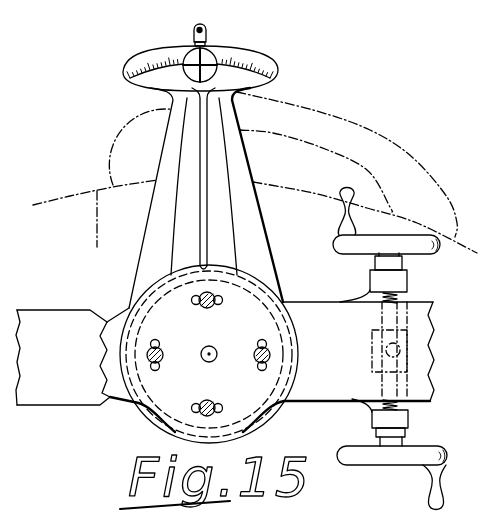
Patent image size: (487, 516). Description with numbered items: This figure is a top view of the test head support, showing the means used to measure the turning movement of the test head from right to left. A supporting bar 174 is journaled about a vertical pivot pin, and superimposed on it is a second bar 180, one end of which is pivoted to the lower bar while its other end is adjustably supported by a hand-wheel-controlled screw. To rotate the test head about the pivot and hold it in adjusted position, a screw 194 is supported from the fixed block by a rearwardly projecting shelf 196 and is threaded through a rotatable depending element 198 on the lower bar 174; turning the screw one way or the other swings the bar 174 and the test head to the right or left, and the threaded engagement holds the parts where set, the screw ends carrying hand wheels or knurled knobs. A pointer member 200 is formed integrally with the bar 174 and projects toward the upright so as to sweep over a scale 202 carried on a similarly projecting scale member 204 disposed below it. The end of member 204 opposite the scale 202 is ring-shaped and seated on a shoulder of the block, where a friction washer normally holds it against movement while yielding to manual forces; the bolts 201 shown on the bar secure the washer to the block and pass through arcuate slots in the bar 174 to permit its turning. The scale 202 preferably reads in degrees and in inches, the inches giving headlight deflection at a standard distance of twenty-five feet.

The supporting bar 174 is at (333, 383).
The second bar 180 is at (90, 397).
The screw 194 is at (403, 400).
The rearwardly projecting shelf 196 is at (408, 423).
The rotatable depending element 198 is at (410, 353).
The pointer member 200 is at (160, 247).
The bolts 201 is at (250, 362).
The scale 202 is at (278, 66).
The scale member 204 is at (250, 229).